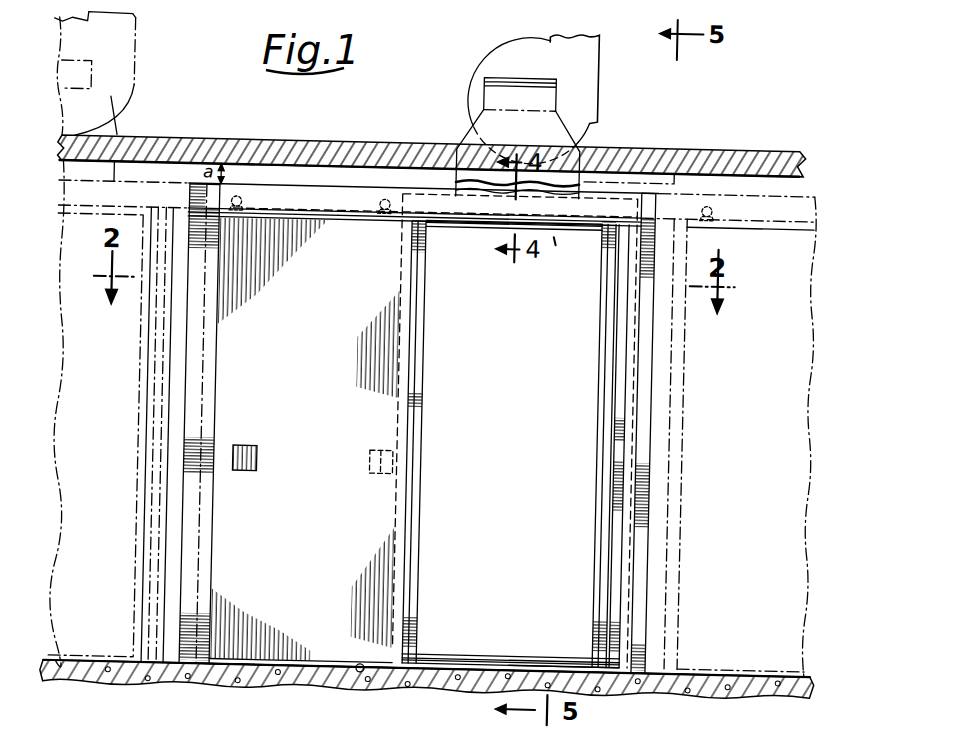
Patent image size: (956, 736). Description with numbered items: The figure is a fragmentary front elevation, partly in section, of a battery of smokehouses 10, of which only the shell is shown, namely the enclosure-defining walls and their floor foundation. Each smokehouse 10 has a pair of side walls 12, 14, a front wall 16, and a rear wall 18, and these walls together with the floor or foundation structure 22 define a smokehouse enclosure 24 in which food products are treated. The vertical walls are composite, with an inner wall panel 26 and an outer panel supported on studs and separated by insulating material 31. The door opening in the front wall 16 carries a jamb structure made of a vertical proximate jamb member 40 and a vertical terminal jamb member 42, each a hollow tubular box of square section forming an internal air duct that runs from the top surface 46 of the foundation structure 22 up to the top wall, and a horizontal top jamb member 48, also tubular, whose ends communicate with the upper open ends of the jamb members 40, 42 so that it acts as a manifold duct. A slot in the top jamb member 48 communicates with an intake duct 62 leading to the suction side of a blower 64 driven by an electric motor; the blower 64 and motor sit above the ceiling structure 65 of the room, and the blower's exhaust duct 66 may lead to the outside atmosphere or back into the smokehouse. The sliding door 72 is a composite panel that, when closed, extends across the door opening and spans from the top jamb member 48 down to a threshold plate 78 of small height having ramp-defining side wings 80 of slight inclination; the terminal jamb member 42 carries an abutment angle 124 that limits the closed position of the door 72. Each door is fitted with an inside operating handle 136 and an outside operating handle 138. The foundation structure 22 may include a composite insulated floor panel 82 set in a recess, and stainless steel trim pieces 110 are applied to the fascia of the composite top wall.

The smokehouse 10 is at (377, 171).
The side wall 12 is at (216, 386).
The side wall 14 is at (622, 357).
The front wall 16 is at (201, 537).
The rear wall 18 is at (523, 332).
The floor or foundation structure 22 is at (733, 682).
The smokehouse enclosure 24 is at (445, 642).
The inner wall panel 26 is at (636, 726).
The insulating material 31 is at (208, 734).
The proximate jamb member 40 is at (434, 504).
The terminal jamb member 42 is at (598, 489).
The top surface of foundation structure 46 is at (369, 668).
The top jamb member 48 is at (469, 220).
The intake duct 62 is at (575, 127).
The blower 64 is at (575, 67).
The ceiling structure 65 is at (699, 135).
The exhaust duct 66 is at (597, 25).
The door 72 is at (331, 527).
The threshold plate 78 is at (508, 646).
The ramp-defining side wing 80 is at (534, 655).
The composite insulated floor panel 82 is at (478, 735).
The stainless steel trim piece 110 is at (254, 186).
The abutment angle 124 is at (617, 594).
The inside operating handle 136 is at (254, 439).
The outside operating handle 138 is at (377, 442).